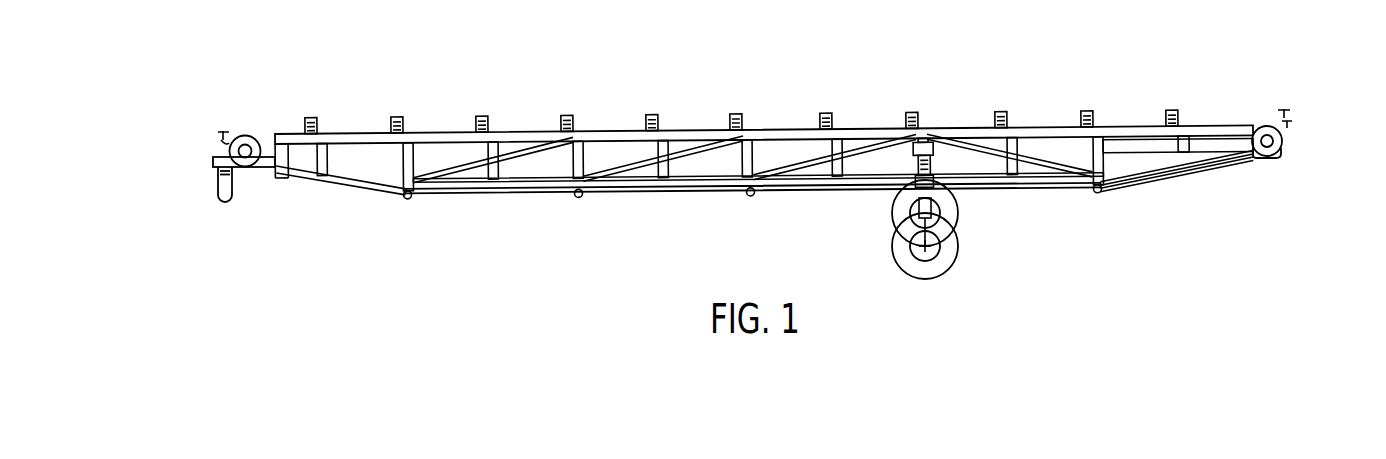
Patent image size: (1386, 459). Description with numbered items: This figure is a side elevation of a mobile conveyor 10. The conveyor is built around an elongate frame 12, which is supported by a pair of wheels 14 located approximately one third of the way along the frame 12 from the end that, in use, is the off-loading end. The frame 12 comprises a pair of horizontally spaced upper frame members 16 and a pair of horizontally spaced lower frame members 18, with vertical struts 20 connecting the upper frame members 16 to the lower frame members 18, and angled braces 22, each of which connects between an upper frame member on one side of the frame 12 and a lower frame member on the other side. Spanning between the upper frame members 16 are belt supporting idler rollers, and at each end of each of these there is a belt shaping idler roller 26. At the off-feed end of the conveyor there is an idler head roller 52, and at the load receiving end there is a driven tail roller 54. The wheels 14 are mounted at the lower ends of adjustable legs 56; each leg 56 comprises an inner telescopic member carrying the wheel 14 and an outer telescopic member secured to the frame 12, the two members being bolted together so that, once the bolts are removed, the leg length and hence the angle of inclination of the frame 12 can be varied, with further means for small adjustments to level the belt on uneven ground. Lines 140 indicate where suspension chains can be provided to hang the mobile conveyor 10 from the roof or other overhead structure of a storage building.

The mobile conveyor 10 is at (1162, 74).
The elongate frame 12 is at (630, 193).
The wheels 14 is at (960, 211).
The upper frame members 16 is at (532, 133).
The lower frame members 18 is at (467, 194).
The vertical struts 20 is at (586, 146).
The angled braces 22 is at (800, 167).
The belt shaping idler roller 26 is at (1000, 112).
The idler head roller 52 is at (1262, 127).
The driven tail roller 54 is at (247, 133).
The adjustable legs 56 is at (914, 166).
The lines 140 is at (221, 146).